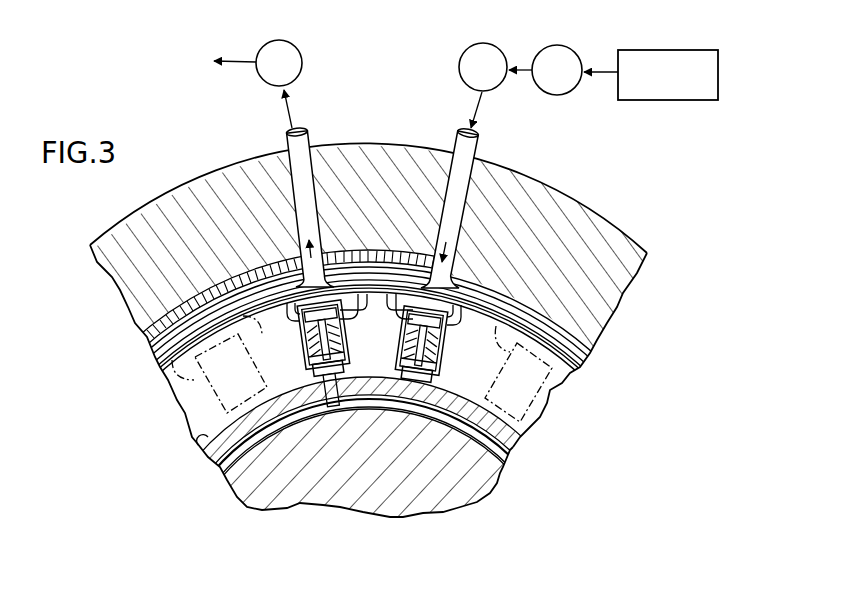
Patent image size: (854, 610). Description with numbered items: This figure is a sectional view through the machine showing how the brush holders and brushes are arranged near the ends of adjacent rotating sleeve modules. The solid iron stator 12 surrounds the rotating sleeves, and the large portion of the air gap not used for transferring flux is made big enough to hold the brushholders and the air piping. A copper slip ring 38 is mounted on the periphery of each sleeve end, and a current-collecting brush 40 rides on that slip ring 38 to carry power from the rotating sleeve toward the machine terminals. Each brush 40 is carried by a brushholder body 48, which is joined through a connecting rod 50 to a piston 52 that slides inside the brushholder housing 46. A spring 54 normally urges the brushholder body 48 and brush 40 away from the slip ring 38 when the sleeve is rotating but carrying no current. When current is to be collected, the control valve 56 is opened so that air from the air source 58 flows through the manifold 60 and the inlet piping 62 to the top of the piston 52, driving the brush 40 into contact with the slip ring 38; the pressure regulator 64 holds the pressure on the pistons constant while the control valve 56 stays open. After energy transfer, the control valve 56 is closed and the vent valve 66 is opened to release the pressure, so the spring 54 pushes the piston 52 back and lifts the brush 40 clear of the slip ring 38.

The stator 12 is at (357, 147).
The slip ring 38 is at (200, 448).
The brush 40 is at (333, 406).
The brushholder housing 46 is at (297, 338).
The brushholder body 48 is at (325, 415).
The connecting rod 50 is at (303, 348).
The piston 52 is at (447, 347).
The spring 54 is at (351, 325).
The control valve 56 is at (467, 52).
The air source 58 is at (650, 50).
The manifold 60 is at (416, 251).
The inlet piping 62 is at (470, 282).
The pressure regulator 64 is at (549, 48).
The vent valve 66 is at (304, 33).